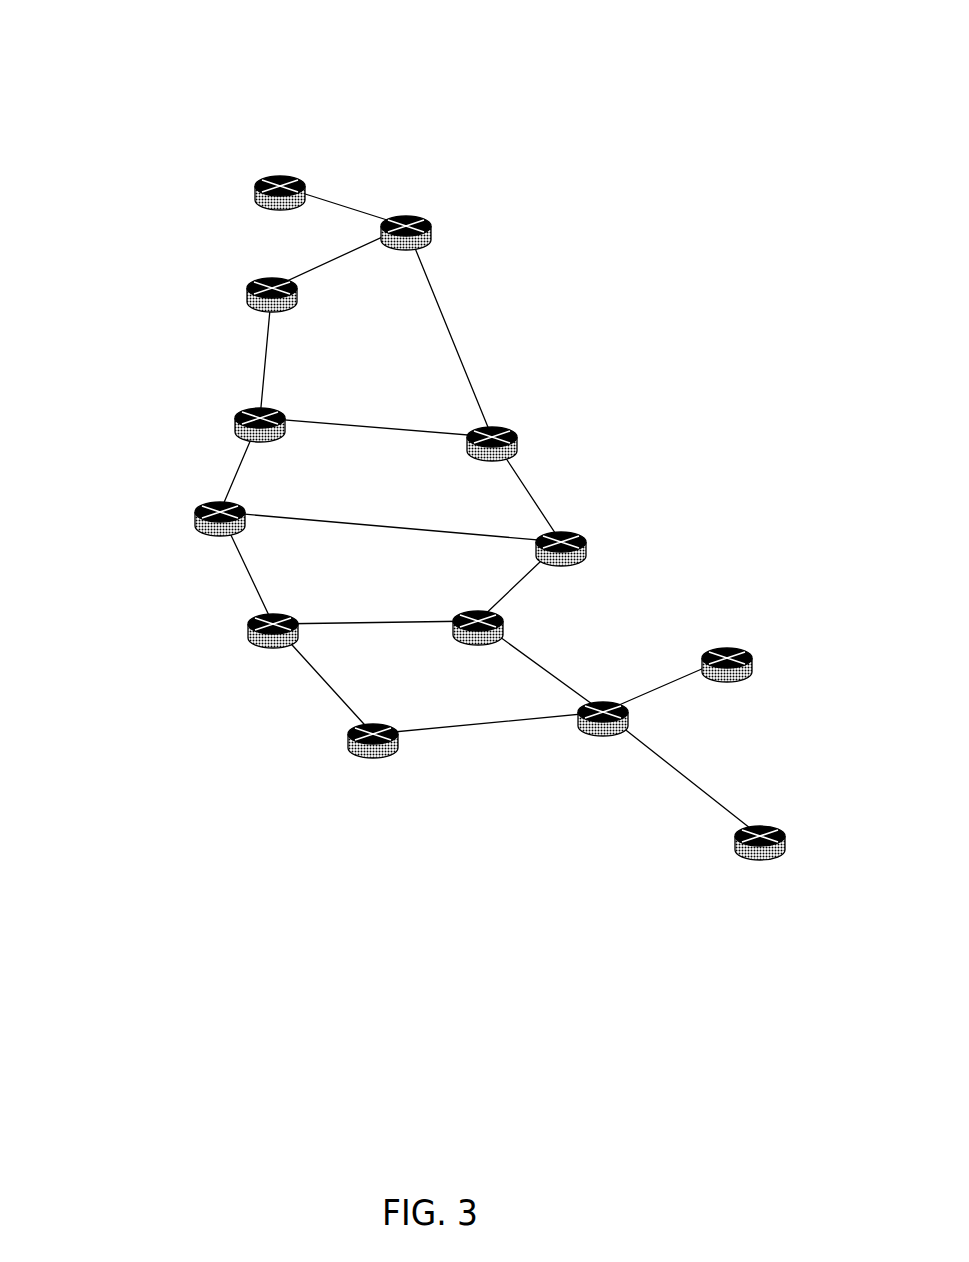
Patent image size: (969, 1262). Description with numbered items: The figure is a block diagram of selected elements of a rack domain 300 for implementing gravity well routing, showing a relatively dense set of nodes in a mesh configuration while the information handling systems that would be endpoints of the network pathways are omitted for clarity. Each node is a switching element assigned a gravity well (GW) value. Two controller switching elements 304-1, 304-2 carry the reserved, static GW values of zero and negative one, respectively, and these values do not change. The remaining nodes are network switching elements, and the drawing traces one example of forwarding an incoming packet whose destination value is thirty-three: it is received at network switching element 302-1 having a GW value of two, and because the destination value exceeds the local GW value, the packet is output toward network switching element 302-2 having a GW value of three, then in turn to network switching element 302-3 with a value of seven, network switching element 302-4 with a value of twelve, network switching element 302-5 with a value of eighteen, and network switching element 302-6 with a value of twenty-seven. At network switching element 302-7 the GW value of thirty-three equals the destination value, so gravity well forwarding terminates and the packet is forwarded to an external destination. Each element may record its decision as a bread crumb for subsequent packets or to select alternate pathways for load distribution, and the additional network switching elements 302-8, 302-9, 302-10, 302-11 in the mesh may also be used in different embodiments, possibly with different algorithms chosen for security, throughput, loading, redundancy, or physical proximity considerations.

The rack domain 300 is at (109, 27).
The controller switching element 304-1 is at (262, 201).
The controller switching element 304-2 is at (741, 850).
The network switching element 302-1 is at (295, 303).
The network switching element 302-2 is at (281, 435).
The network switching element 302-3 is at (241, 533).
The network switching element 302-4 is at (294, 643).
The network switching element 302-5 is at (393, 754).
The network switching element 302-6 is at (626, 724).
The network switching element 302-7 is at (745, 677).
The network switching element 302-8 is at (512, 457).
The network switching element 302-9 is at (428, 241).
The network switching element 302-10 is at (583, 562).
The network switching element 302-11 is at (501, 633).